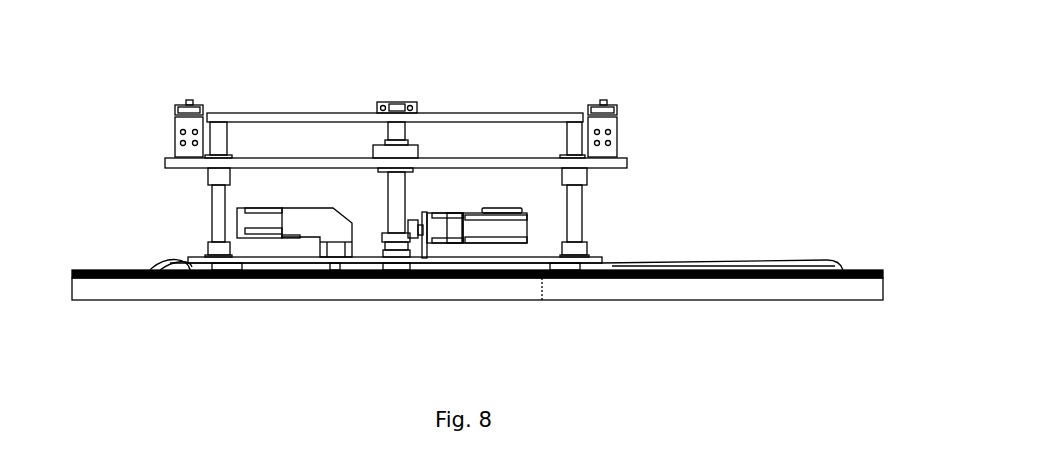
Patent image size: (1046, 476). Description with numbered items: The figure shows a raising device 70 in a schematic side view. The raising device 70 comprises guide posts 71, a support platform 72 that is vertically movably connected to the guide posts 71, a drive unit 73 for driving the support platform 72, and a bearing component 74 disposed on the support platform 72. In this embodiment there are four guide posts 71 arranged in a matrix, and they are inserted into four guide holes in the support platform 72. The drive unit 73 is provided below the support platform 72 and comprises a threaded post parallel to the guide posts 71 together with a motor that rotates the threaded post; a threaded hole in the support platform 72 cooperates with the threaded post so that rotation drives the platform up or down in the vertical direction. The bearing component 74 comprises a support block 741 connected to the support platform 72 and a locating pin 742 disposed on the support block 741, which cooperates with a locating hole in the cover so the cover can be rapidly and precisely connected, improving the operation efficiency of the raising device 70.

The raising device 70 is at (430, 26).
The guide post 71 is at (222, 206).
The support platform 72 is at (620, 165).
The drive unit 73 is at (485, 227).
The bearing component 74 is at (80, 62).
The support block 741 is at (178, 137).
The locating pin 742 is at (187, 100).